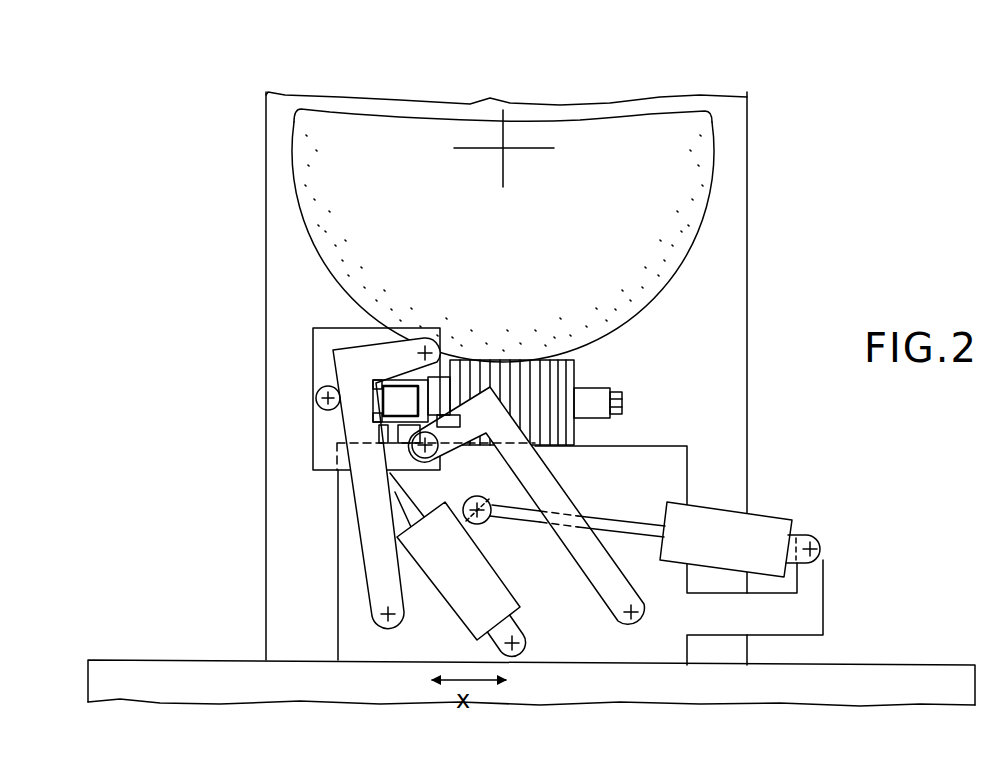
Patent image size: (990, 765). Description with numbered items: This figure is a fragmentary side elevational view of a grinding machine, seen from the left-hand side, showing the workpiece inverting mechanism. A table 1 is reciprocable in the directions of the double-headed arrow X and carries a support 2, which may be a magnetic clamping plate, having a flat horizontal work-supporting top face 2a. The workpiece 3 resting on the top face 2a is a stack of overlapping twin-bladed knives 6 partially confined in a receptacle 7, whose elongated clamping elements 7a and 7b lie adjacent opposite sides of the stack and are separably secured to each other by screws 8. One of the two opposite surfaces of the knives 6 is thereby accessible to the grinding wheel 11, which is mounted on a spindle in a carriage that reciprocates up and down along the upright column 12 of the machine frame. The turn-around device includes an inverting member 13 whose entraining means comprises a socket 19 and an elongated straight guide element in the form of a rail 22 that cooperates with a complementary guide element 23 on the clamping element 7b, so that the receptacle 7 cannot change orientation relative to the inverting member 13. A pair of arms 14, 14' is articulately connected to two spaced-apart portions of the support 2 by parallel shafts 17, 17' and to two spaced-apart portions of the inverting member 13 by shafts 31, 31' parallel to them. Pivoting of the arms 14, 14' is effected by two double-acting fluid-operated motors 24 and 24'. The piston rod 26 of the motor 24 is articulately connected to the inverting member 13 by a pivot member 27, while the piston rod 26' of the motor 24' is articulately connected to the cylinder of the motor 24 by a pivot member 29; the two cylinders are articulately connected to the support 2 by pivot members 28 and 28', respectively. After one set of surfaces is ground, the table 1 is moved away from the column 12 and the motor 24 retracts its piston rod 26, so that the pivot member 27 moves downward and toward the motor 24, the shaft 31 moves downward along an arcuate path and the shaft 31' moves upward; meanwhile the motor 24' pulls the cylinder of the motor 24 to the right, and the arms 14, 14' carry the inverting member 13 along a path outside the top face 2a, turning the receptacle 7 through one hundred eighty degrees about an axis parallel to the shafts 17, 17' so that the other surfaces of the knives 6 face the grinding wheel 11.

The table 1 is at (897, 671).
The support 2 is at (682, 469).
The top face 2a is at (655, 441).
The workpiece 3 is at (570, 455).
The knife 6 is at (562, 363).
The receptacle 7 is at (632, 373).
The clamping element 7a is at (596, 417).
The clamping element 7b is at (440, 380).
The screws 8 is at (618, 404).
The grinding wheel 11 is at (676, 253).
The column 12 is at (740, 225).
The inverting member 13 is at (325, 328).
The arm 14 is at (356, 483).
The arm 14' is at (526, 505).
The shaft 17 is at (335, 621).
The shaft 17' is at (588, 601).
The socket 19 is at (393, 433).
The rail 22 is at (393, 400).
The guide element 23 is at (378, 420).
The motor 24 is at (461, 579).
The motor 24' is at (740, 522).
The piston rod 26 is at (434, 497).
The piston rod 26' is at (577, 512).
The pivot member 27 is at (322, 393).
The pivot member 28 is at (538, 646).
The pivot member 28' is at (827, 524).
The pivot member 29 is at (485, 517).
The shaft 31 is at (421, 310).
The shaft 31' is at (436, 453).